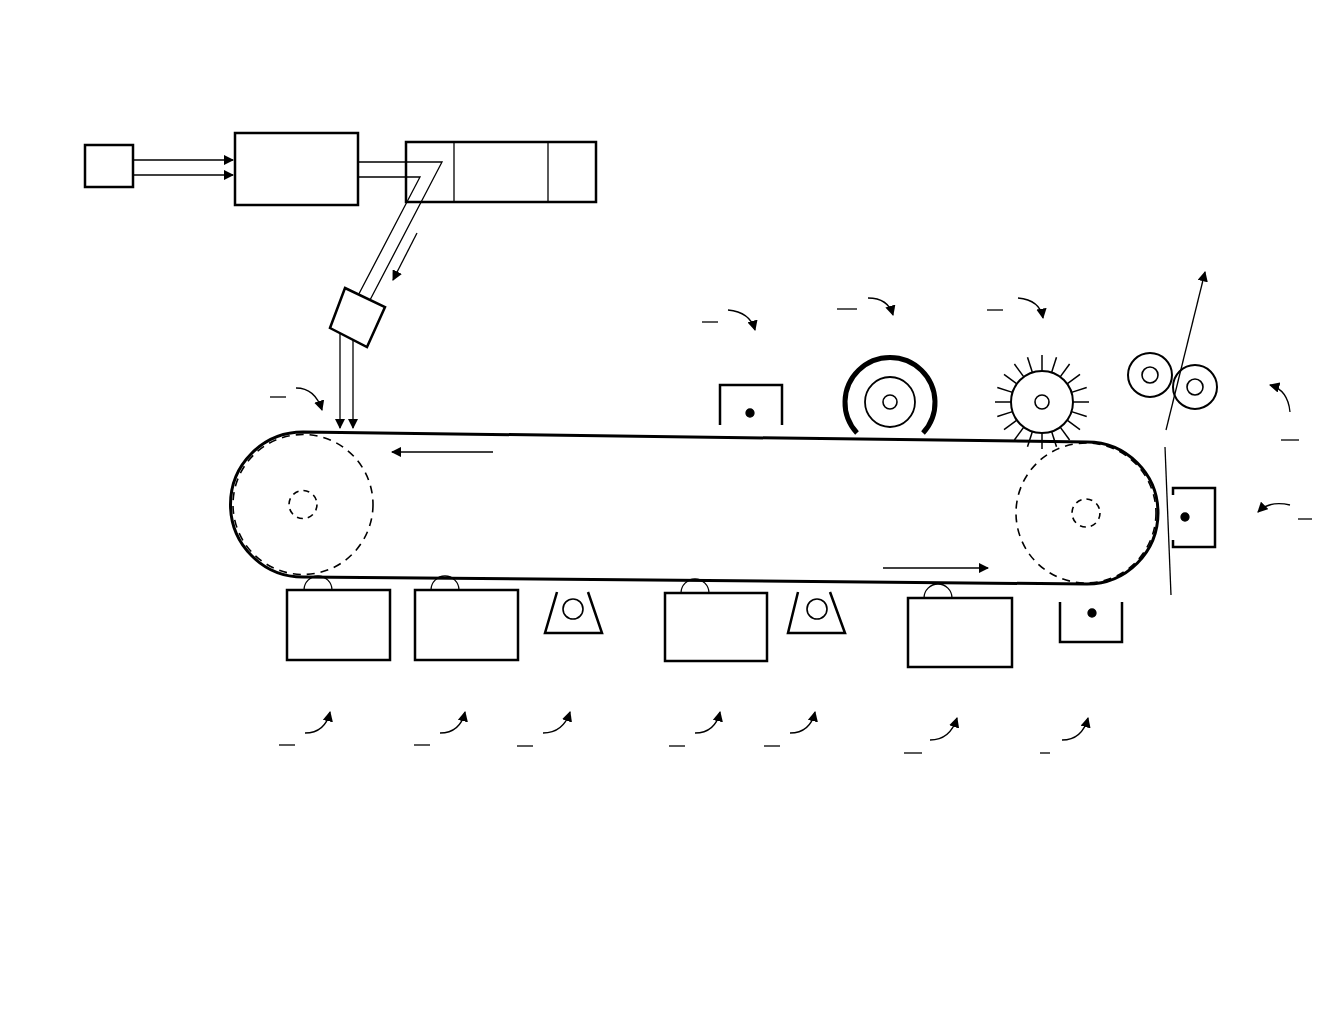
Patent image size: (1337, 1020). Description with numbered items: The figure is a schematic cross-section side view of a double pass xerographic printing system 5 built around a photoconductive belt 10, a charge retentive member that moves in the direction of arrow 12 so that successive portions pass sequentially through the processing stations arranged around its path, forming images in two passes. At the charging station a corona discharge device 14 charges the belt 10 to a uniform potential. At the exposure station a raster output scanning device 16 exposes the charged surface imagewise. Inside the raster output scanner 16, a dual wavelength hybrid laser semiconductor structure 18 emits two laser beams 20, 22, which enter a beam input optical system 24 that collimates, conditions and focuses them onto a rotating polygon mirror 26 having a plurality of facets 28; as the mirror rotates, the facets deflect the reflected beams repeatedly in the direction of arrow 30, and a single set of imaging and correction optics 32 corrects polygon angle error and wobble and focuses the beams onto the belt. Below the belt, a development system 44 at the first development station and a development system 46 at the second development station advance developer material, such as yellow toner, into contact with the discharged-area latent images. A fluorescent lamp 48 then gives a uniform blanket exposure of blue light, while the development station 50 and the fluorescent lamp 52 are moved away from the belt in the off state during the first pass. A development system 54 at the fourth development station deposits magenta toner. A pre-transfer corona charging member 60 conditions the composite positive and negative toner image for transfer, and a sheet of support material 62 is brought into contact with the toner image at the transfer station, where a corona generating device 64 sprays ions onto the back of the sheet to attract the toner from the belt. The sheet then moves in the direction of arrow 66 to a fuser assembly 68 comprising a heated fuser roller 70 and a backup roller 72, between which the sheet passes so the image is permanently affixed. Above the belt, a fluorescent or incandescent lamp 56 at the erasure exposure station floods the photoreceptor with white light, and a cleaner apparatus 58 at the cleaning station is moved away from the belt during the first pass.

The double pass xerographic printing system 5 is at (1075, 82).
The photoconductive belt 10 is at (229, 505).
The arrow 12 is at (440, 452).
The corona discharge device 14 is at (720, 405).
The raster output scanning device 16 is at (613, 82).
The dual wavelength hybrid laser semiconductor structure 18 is at (117, 145).
The laser beam 20 is at (152, 155).
The laser beam 22 is at (152, 172).
The beam input optical system 24 is at (297, 133).
The rotating polygon mirror 26 is at (518, 142).
The facets 28 is at (430, 150).
The arrow 30 is at (404, 257).
The imaging and correction optics 32 is at (378, 330).
The development system 44 is at (390, 635).
The development system 46 is at (518, 640).
The fluorescent lamp 48 is at (583, 635).
The development station 50 is at (767, 640).
The fluorescent lamp 52 is at (830, 635).
The development system 54 is at (1012, 645).
The fluorescent or incandescent lamp 56 is at (850, 390).
The cleaner apparatus 58 is at (1012, 388).
The pre-transfer corona charging member 60 is at (1122, 625).
The sheet of support material 62 is at (1167, 572).
The corona generating device 64 is at (1215, 522).
The arrow 66 is at (1192, 296).
The fuser assembly 68 is at (1188, 374).
The heated fuser roller 70 is at (1197, 410).
The backup roller 72 is at (1128, 360).